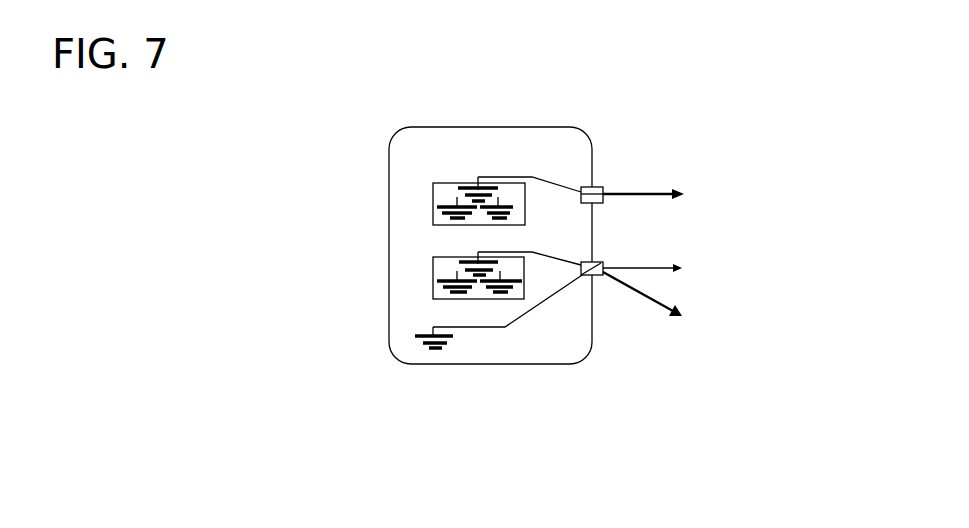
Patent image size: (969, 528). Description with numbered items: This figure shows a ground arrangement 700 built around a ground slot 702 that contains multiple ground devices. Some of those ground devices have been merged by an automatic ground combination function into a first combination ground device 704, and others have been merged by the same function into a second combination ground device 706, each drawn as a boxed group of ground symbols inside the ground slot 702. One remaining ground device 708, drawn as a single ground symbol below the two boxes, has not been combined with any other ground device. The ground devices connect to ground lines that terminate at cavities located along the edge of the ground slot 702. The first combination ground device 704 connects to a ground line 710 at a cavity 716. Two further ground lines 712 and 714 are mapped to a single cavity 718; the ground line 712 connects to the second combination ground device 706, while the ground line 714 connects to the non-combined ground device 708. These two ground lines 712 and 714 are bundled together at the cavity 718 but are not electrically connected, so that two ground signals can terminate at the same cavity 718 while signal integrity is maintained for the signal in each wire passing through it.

The ground arrangement 700 is at (393, 91).
The ground slot 702 is at (558, 147).
The first combination ground device 704 is at (442, 196).
The second combination ground device 706 is at (440, 294).
The ground device 708 is at (418, 347).
The ground line 710 is at (633, 193).
The ground line 712 is at (647, 270).
The ground line 714 is at (633, 291).
The cavity 716 is at (600, 188).
The cavity 718 is at (597, 275).